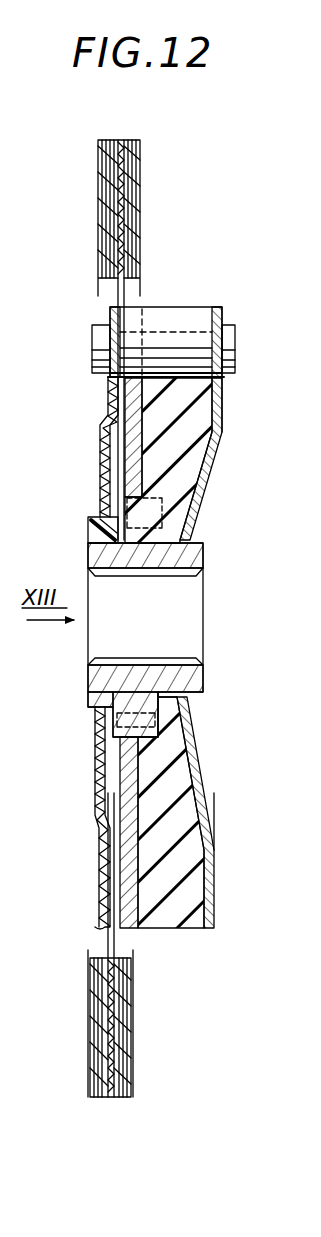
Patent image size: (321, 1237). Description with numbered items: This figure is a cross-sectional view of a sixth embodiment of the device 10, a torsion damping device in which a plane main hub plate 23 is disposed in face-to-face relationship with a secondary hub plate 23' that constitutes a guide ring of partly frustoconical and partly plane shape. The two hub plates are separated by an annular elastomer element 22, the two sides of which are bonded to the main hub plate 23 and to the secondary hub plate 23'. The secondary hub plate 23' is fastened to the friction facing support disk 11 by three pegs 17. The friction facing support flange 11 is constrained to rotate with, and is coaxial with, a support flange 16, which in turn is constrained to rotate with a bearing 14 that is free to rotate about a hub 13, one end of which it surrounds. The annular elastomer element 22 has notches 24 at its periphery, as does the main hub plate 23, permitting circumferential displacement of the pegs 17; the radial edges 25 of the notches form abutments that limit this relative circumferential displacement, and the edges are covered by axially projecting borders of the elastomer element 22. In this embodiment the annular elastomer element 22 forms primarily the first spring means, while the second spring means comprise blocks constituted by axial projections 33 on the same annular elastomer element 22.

The device 10 is at (241, 258).
The friction facing support flange 11 is at (113, 296).
The hub 13 is at (208, 546).
The bearing 14 is at (86, 526).
The support flange 16 is at (106, 315).
The pegs 17 is at (239, 326).
The annular elastomer element 22 is at (184, 935).
The main hub plate 23 is at (132, 848).
The secondary hub plate 23' is at (214, 843).
The notches 24 is at (199, 372).
The radial edges 25 is at (168, 316).
The axial projections 33 is at (125, 499).